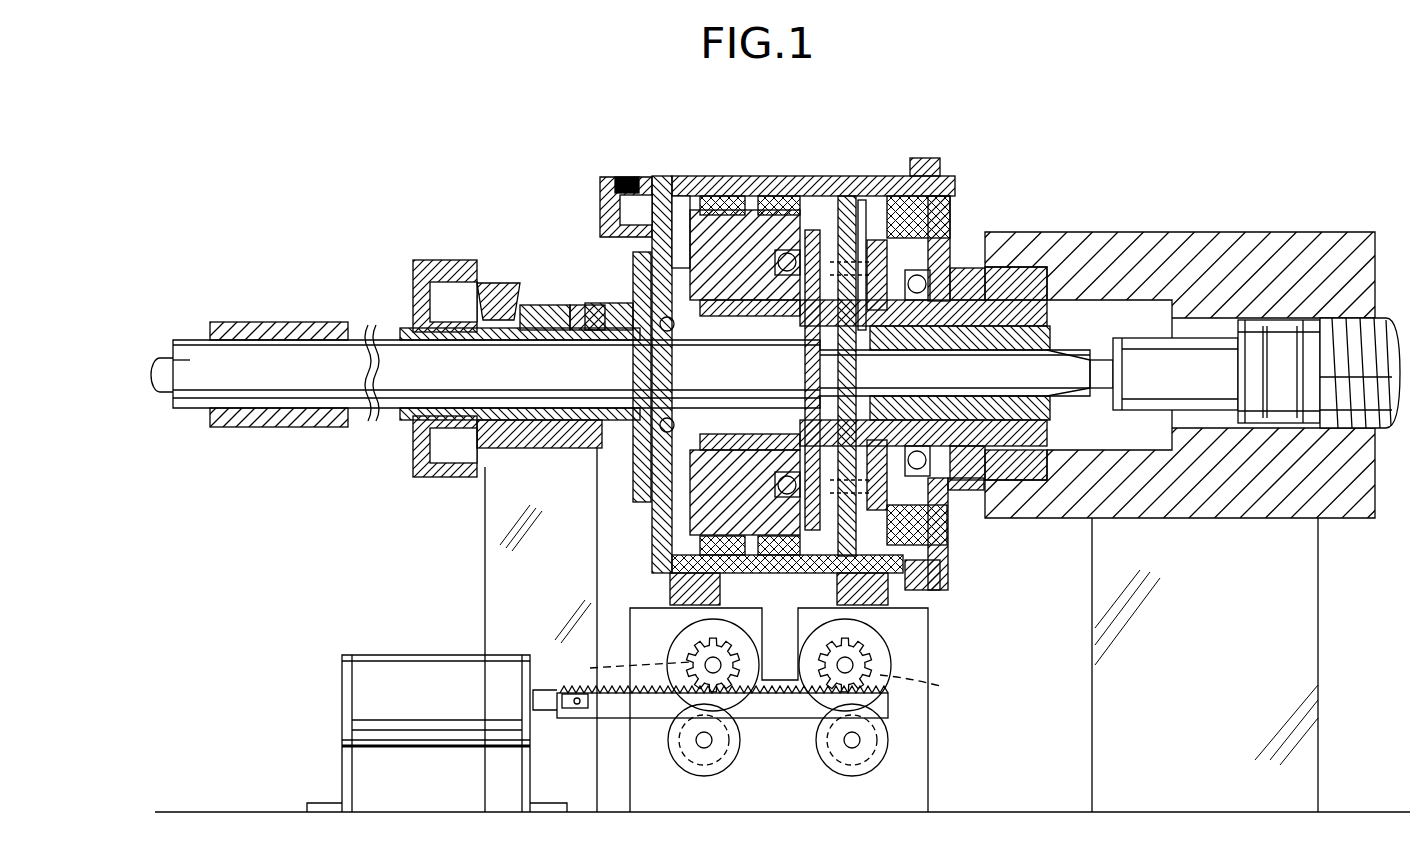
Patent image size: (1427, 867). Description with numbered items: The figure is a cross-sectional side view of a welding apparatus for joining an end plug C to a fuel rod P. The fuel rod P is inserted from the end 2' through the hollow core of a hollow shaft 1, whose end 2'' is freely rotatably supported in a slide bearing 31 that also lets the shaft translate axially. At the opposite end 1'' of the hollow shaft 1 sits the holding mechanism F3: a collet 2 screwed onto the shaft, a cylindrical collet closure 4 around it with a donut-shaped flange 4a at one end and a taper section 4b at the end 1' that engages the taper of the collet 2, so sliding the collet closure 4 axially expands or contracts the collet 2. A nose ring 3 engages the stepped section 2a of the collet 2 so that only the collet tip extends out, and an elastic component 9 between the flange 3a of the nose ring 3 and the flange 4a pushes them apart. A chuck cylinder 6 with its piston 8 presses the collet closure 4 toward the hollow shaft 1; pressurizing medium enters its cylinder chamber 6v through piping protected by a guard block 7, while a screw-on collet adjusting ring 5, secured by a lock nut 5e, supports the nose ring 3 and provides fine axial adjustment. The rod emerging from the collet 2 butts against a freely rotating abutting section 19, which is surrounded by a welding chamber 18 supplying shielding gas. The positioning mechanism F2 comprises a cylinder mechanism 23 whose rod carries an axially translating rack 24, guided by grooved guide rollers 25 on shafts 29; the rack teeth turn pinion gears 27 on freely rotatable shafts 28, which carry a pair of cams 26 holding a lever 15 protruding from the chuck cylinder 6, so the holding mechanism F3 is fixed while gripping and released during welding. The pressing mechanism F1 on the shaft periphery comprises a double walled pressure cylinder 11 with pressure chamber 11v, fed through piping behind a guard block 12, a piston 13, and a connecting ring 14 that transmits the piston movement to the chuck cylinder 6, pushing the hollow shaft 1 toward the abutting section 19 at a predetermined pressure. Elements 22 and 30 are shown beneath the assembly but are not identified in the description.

The hollow shaft 1 is at (631, 400).
The end 1' is at (1094, 270).
The end of the hollow shaft 1'' is at (992, 299).
The collet 2 is at (1098, 347).
The end 2' is at (169, 416).
The end of the hollow shaft 2'' is at (195, 315).
The stepped section 2a is at (1070, 326).
The nose ring 3 is at (1025, 298).
The flange 3a is at (884, 250).
The collet closure 4 is at (952, 318).
The flange 4a is at (821, 245).
The taper section 4b is at (1038, 470).
The collet adjusting ring 5 is at (950, 212).
The lock nut 5e is at (923, 158).
The chuck cylinder 6 is at (783, 186).
The cylinder chamber 6v is at (680, 205).
The guard block 7 is at (600, 192).
The piston 8 is at (728, 240).
The elastic component 9 is at (856, 232).
The pressure cylinder 11 is at (548, 306).
The pressure chamber 11v is at (522, 300).
The guard block 12 is at (470, 292).
The piston 13 is at (566, 310).
The connecting ring 14 is at (636, 282).
The lever 15 is at (820, 620).
The welding chamber 18 is at (1272, 232).
The abutting section 19 is at (1152, 337).
The support column 22 is at (485, 534).
The cylinder mechanism 23 is at (420, 660).
The rack 24 is at (660, 718).
The guide rollers 25 is at (700, 776).
The cams 26 is at (690, 645).
The pinion gears 27 is at (764, 677).
The shafts 28 is at (710, 664).
The shafts 29 is at (708, 744).
The support column 30 is at (1092, 765).
The slide bearing 31 is at (286, 322).
The fuel rod P is at (1068, 408).
The end plug C is at (1108, 408).
The pressing mechanism F1 is at (490, 196).
The positioning mechanism F2 is at (930, 714).
The holding mechanism F3 is at (957, 498).